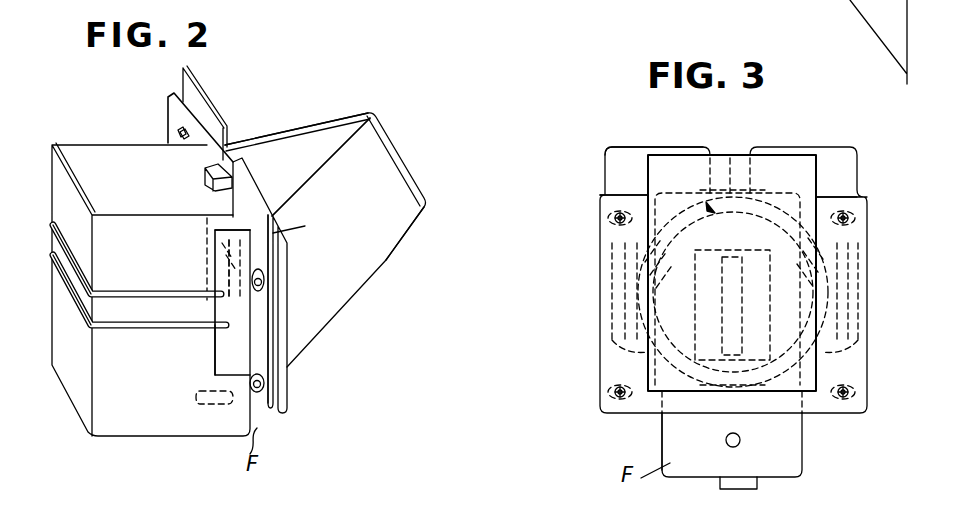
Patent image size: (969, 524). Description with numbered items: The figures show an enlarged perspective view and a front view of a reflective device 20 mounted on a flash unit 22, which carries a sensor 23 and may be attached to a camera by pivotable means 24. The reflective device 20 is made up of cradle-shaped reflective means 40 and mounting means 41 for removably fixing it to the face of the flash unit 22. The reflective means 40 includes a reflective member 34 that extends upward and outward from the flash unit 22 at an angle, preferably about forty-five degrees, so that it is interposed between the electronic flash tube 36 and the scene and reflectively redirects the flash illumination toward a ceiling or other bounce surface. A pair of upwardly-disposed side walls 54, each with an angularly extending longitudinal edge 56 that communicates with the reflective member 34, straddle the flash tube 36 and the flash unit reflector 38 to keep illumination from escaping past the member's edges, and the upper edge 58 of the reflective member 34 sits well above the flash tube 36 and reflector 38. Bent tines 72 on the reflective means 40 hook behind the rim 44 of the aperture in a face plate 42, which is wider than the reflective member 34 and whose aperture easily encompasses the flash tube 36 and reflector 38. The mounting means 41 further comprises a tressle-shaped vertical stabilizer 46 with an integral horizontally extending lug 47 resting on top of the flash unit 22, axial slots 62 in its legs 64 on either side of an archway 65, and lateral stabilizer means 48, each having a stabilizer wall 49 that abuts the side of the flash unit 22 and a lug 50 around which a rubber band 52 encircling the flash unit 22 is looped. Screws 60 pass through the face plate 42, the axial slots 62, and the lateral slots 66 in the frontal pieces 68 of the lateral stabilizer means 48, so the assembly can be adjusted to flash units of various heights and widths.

In FIG. 2, the reflective device 20 is at (247, 124).
In FIG. 3, the reflective device 20 is at (600, 318).
In FIG. 2, the flash unit 22 is at (143, 376).
In FIG. 3, the flash unit 22 is at (701, 180).
In FIG. 2, the sensor 23 is at (198, 398).
In FIG. 3, the sensor 23 is at (732, 448).
In FIG. 3, the pivotable means 24 is at (758, 484).
In FIG. 2, the reflective member 34 is at (340, 198).
In FIG. 3, the reflective member 34 is at (780, 163).
In FIG. 2, the flash tube 36 is at (220, 262).
In FIG. 3, the flash tube 36 is at (732, 305).
In FIG. 2, the flash unit reflector 38 is at (210, 233).
In FIG. 3, the flash unit reflector 38 is at (756, 367).
In FIG. 2, the reflective means 40 is at (320, 145).
In FIG. 2, the mounting means 41 is at (286, 320).
In FIG. 2, the face plate 42 is at (289, 376).
In FIG. 3, the face plate 42 is at (684, 410).
In FIG. 3, the rim 44 is at (741, 224).
In FIG. 2, the tressle-shaped vertical stabilizer 46 is at (197, 106).
In FIG. 3, the tressle-shaped vertical stabilizer 46 is at (630, 153).
In FIG. 2, the horizontally extending lug 47 is at (206, 180).
In FIG. 3, the horizontally extending lug 47 is at (735, 158).
In FIG. 2, the lateral stabilizer means 48 is at (169, 108).
In FIG. 2, the stabilizer wall 49 is at (226, 346).
In FIG. 2, the lug 50 is at (222, 308).
In FIG. 2, the rubber band 52 is at (70, 300).
In FIG. 2, the side walls 54 is at (271, 174).
In FIG. 3, the side walls 54 is at (648, 178).
In FIG. 2, the angularly extending longitudinal edge 56 is at (332, 165).
In FIG. 3, the upper edge 58 is at (717, 150).
In FIG. 2, the screws 60 is at (183, 140).
In FIG. 3, the screws 60 is at (879, 207).
In FIG. 3, the axial slots 62 is at (598, 298).
In FIG. 3, the legs 64 is at (600, 355).
In FIG. 3, the archway 65 is at (722, 222).
In FIG. 2, the lateral slots 66 is at (178, 135).
In FIG. 3, the lateral slots 66 is at (606, 218).
In FIG. 2, the frontal pieces 68 is at (175, 121).
In FIG. 3, the tines 72 is at (806, 308).